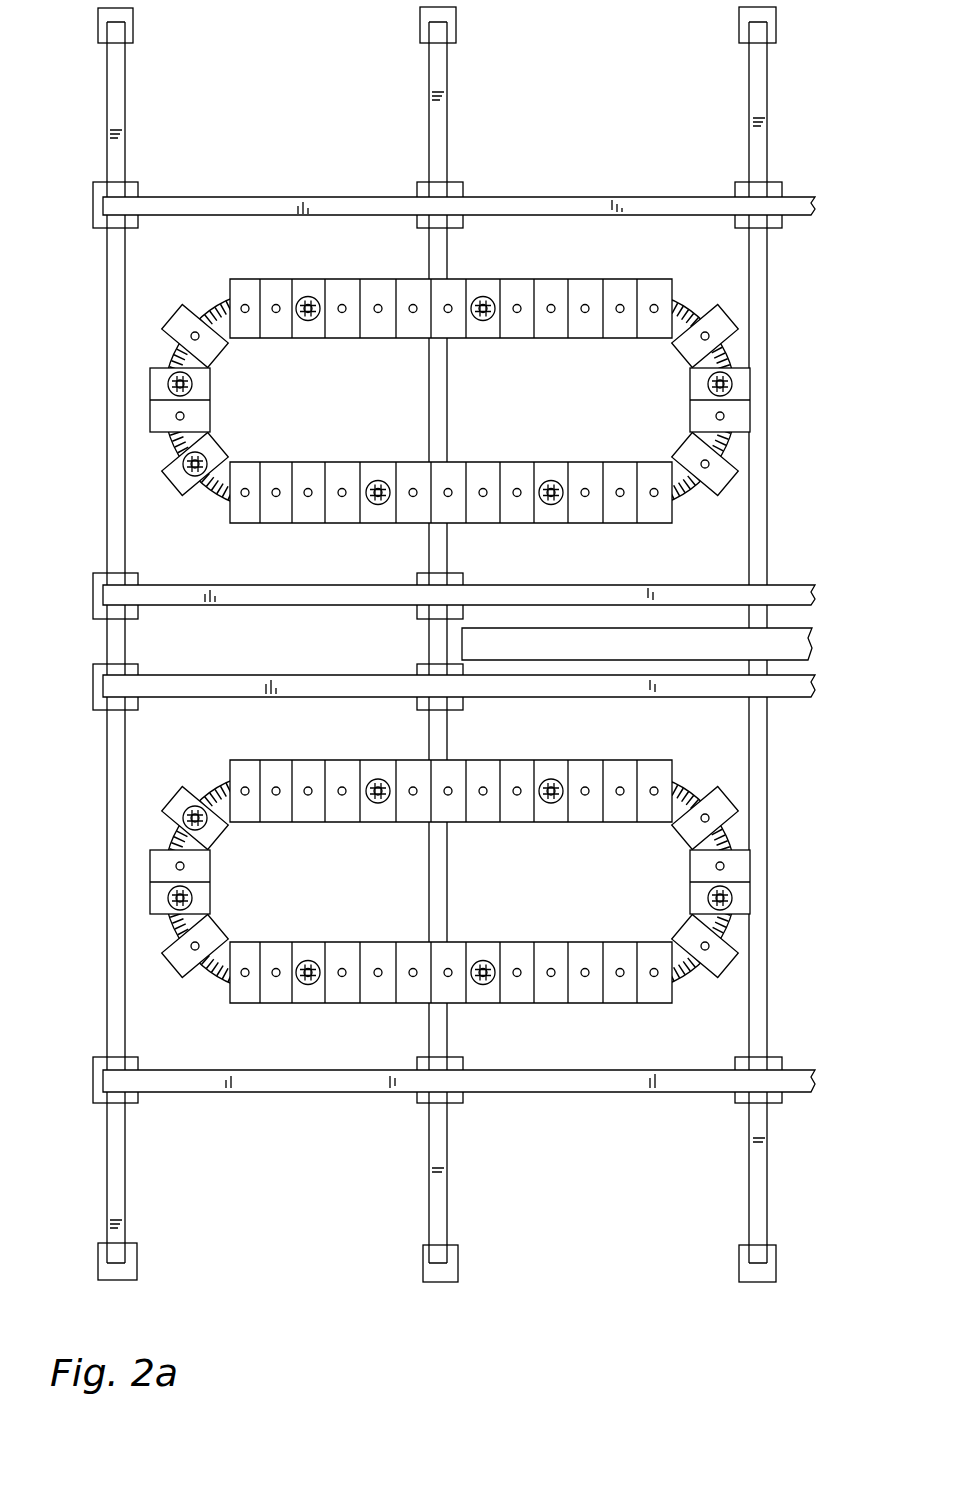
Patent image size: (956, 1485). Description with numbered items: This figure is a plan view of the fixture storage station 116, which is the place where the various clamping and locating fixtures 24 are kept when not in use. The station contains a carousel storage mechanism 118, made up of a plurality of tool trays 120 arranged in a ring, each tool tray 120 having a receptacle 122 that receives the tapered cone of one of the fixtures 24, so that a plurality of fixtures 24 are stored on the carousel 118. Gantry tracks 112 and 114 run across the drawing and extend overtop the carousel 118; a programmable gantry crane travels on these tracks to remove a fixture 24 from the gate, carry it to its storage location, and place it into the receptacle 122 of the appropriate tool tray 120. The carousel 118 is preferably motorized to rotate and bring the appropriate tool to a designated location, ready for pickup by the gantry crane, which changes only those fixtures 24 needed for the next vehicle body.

The fixture 24 is at (243, 378).
The gantry track 112 is at (272, 209).
The gantry track 114 is at (285, 598).
The fixture storage station 116 is at (800, 1280).
The carousel storage mechanism 118 is at (762, 853).
The tool tray 120 is at (478, 288).
The receptacle 122 is at (272, 288).